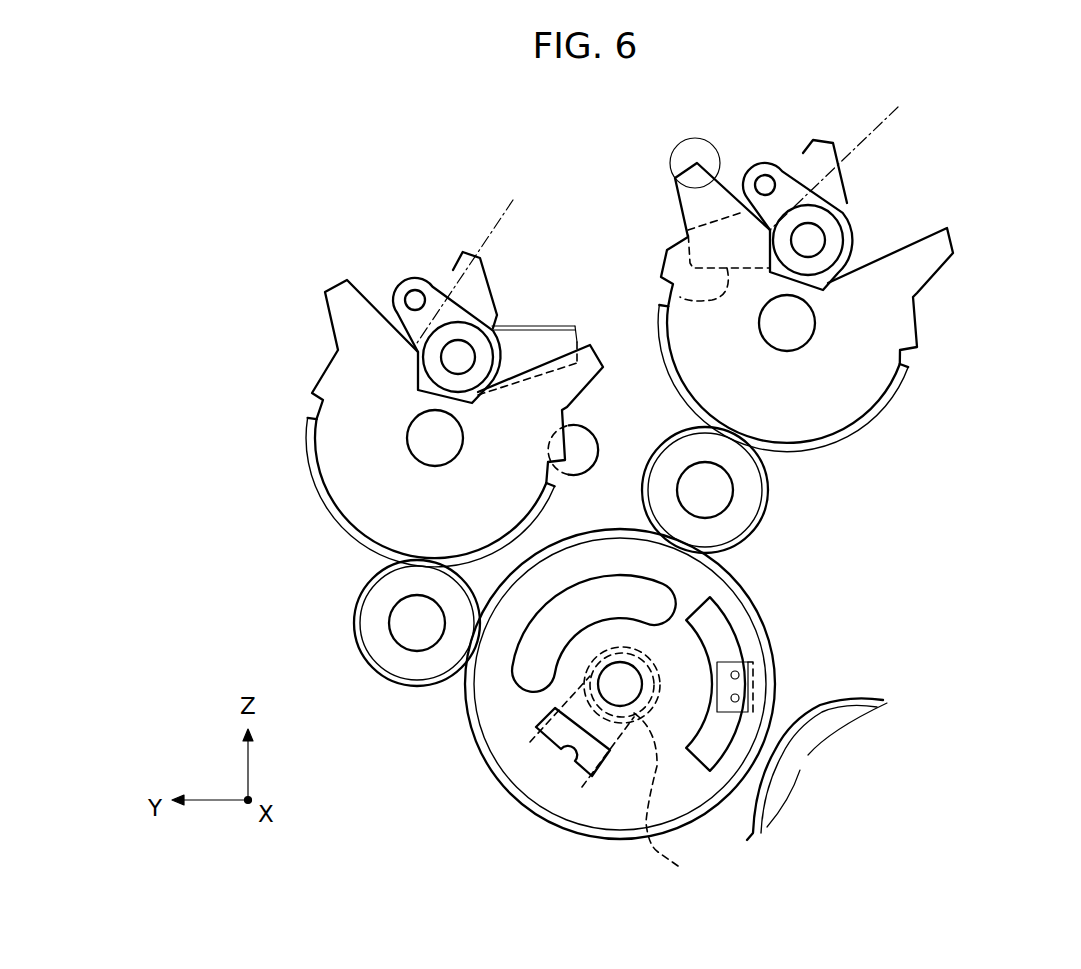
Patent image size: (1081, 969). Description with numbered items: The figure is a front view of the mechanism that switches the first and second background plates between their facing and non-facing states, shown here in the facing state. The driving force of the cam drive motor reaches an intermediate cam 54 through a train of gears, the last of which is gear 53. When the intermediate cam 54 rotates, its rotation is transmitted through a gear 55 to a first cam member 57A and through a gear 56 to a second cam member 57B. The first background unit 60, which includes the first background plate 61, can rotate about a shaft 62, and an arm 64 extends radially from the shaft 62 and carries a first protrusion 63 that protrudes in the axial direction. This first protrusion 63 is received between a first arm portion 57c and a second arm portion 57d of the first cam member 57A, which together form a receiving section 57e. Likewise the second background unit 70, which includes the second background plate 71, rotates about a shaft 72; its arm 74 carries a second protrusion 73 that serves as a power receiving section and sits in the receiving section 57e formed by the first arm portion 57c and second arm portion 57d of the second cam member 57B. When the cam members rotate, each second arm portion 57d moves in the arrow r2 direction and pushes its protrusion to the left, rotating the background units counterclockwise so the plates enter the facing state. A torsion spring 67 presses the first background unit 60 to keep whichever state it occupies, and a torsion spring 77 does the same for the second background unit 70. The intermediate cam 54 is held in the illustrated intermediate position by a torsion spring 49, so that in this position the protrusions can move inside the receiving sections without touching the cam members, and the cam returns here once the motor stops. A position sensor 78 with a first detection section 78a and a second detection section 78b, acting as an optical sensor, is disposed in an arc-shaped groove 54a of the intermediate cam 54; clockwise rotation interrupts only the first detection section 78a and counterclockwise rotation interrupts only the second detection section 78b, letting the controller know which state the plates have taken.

The torsion spring 49 is at (618, 768).
The gear 53 is at (883, 700).
The intermediate cam 54 is at (590, 836).
The arc-shaped groove 54a is at (735, 620).
The gear 55 is at (392, 670).
The gear 56 is at (765, 514).
The first cam member 57A is at (307, 455).
The second cam member 57B is at (893, 408).
The first arm portion 57c is at (338, 307).
The second arm portion 57d is at (592, 372).
The receiving section 57e is at (367, 282).
The first background unit 60 is at (537, 262).
The first background plate 61 is at (575, 326).
The shaft 62 is at (456, 357).
The first protrusion 63 is at (395, 295).
The arm 64 is at (415, 300).
The torsion spring 67 is at (571, 476).
The second background unit 70 is at (793, 143).
The second background plate 71 is at (660, 275).
The shaft 72 is at (812, 239).
The second protrusion 73 is at (766, 183).
The arm 74 is at (743, 182).
The torsion spring 77 is at (680, 145).
The position sensor 78 is at (813, 662).
The first detection section 78a is at (735, 675).
The second detection section 78b is at (735, 698).
The arrow direction r2 is at (498, 283).